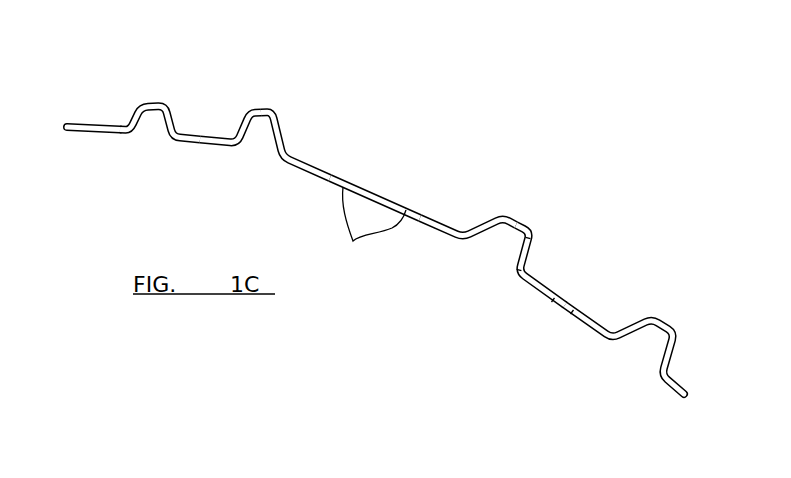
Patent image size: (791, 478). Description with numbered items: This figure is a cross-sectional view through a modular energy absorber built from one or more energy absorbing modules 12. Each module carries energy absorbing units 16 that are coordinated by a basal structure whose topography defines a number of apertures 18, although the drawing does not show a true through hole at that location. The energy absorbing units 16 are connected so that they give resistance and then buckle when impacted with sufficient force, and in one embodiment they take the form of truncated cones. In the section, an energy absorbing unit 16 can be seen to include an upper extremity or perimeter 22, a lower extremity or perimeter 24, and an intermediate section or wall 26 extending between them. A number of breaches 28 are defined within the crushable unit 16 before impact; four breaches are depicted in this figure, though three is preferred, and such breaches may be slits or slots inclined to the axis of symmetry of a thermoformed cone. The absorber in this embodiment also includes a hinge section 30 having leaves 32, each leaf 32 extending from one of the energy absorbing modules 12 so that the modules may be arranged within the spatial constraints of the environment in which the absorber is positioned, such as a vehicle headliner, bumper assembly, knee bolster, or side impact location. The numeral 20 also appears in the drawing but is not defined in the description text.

The energy absorbing module 12 is at (217, 173).
The energy absorbing unit 16 is at (283, 133).
The aperture 18 is at (569, 298).
The bend 20 is at (531, 209).
The upper extremity or perimeter 22 is at (170, 104).
The lower extremity or perimeter 24 is at (131, 128).
The intermediate section or wall 26 is at (175, 121).
The breach 28 is at (535, 257).
The hinge section 30 is at (386, 191).
The leaf 32 is at (370, 232).